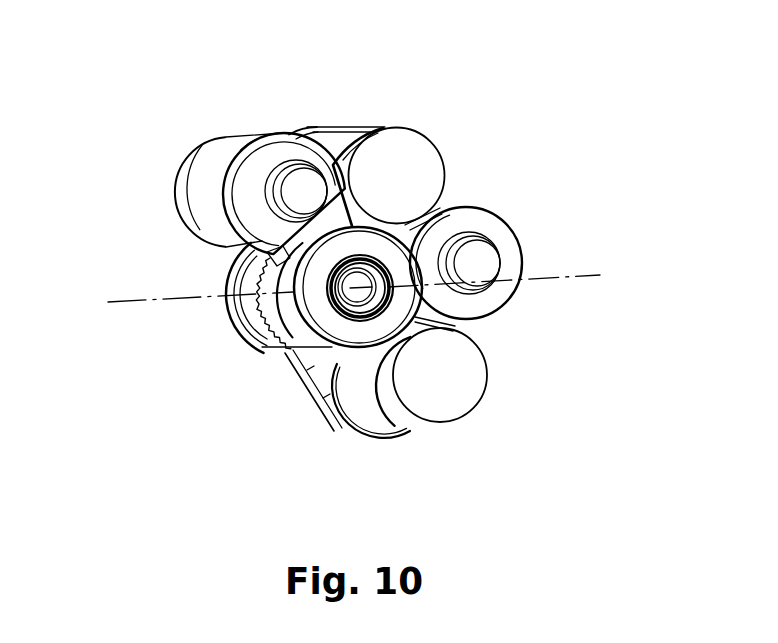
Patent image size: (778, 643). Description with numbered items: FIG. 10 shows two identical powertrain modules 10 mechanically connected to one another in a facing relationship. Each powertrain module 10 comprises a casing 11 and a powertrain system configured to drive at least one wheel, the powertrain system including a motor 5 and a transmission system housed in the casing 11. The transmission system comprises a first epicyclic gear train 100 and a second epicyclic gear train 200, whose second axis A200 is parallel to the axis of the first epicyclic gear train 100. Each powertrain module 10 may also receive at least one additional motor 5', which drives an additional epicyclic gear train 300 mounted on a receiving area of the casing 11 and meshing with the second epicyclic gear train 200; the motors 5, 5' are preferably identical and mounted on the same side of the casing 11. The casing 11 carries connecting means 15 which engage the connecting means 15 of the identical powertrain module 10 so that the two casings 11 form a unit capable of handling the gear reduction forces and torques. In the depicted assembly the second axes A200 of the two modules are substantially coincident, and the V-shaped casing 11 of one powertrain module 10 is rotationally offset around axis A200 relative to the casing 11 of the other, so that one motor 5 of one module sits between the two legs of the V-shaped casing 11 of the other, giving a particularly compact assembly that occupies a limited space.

The motor 5 is at (292, 160).
The additional motor 5' is at (457, 379).
The powertrain module 10 is at (388, 112).
The casing 11 is at (265, 154).
The connecting means 15 is at (263, 308).
The first epicyclic gear train 100 is at (170, 143).
The second epicyclic gear train 200 is at (254, 358).
The additional epicyclic gear train 300 is at (516, 236).
The second axis A200 is at (140, 300).